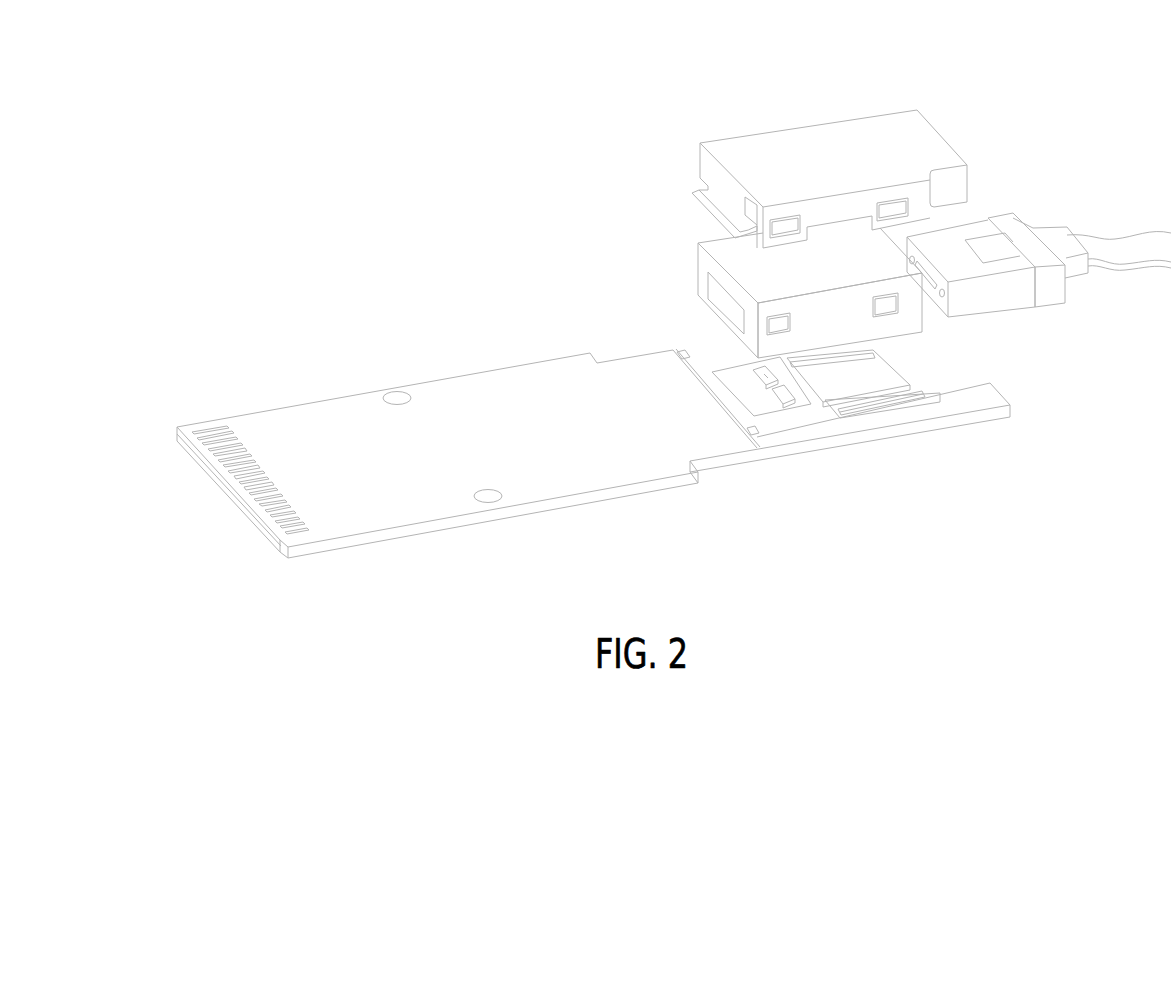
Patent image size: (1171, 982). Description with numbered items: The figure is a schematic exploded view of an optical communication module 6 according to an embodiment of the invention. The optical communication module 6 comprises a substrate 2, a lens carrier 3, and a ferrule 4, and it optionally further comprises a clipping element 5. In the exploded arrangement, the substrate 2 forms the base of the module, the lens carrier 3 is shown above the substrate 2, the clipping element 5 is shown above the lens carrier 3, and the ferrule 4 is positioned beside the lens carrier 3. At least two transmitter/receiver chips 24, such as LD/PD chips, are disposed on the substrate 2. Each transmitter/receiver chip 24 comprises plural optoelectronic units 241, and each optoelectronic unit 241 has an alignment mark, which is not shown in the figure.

The substrate 2 is at (593, 453).
The transmitter/receiver chip 24 is at (815, 436).
The optoelectronic unit 241 is at (805, 406).
The lens carrier 3 is at (673, 253).
The ferrule 4 is at (1041, 202).
The clipping element 5 is at (801, 108).
The optical communication module 6 is at (1052, 60).